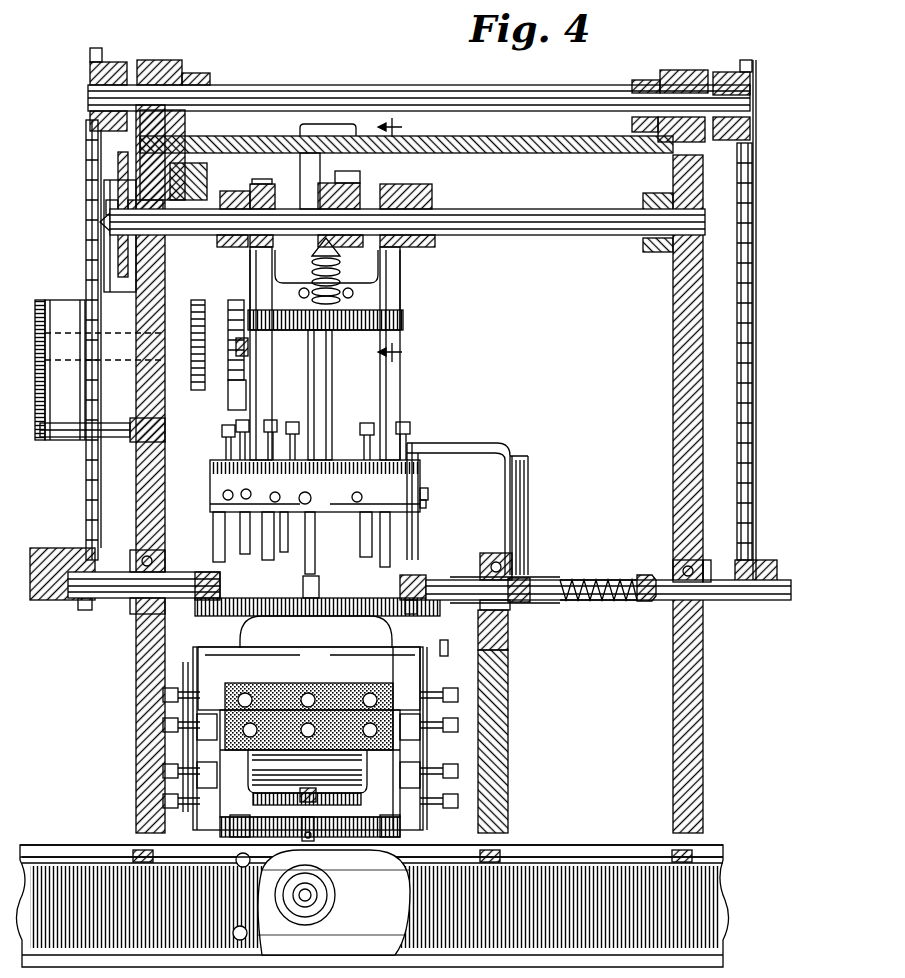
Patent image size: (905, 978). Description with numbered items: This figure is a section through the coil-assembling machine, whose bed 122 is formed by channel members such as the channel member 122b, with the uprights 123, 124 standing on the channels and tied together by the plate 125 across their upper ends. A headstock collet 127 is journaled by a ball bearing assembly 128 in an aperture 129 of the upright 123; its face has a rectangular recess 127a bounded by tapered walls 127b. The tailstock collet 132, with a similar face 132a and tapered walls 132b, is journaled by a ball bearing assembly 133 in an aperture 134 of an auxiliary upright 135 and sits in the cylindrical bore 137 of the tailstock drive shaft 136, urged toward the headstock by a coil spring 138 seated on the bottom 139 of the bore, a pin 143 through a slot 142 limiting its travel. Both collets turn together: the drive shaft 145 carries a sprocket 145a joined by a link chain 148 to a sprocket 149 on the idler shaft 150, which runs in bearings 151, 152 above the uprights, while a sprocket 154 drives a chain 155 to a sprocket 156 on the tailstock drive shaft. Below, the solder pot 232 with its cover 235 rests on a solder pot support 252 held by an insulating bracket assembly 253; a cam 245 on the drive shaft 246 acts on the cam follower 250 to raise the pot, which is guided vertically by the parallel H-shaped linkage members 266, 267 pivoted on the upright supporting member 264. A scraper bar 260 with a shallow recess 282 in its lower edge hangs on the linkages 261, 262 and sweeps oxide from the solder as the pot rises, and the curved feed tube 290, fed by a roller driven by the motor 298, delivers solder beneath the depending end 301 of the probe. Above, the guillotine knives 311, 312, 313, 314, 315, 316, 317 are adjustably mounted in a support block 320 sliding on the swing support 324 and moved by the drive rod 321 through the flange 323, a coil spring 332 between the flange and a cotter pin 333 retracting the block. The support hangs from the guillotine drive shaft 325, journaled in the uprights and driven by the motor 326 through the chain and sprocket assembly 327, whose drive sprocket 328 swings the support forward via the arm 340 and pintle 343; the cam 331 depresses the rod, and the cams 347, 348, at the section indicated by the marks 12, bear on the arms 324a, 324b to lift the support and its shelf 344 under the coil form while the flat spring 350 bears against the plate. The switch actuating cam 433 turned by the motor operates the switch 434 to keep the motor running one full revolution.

The section line 12- 12 is at (407, 239).
The bed 122 is at (742, 890).
The channel member 122b is at (715, 845).
The upright 123 is at (136, 808).
The upright 124 is at (673, 352).
The plate 125 is at (558, 153).
The headstock collet 127 is at (168, 572).
The rectangular recess 127a is at (222, 572).
The tapered walls 127b is at (212, 605).
The ball bearing assembly 128 is at (165, 555).
The aperture 129 is at (135, 612).
The tailstock collet 132 is at (440, 580).
The face 132a is at (415, 575).
The tapered walls 132b is at (414, 610).
The ball bearing assembly 133 is at (508, 632).
The aperture 134 is at (505, 557).
The auxiliary upright 135 is at (508, 790).
The tailstock drive shaft 136 is at (645, 575).
The cylindrical bore 137 is at (600, 580).
The coil spring 138 is at (640, 600).
The bottom of the hole 139 is at (655, 606).
The slot 142 is at (520, 578).
The pin 143 is at (508, 606).
The drive shaft 145 is at (72, 550).
The sprocket 145a is at (78, 612).
The link chain 148 is at (86, 490).
The sprocket 149 is at (108, 62).
The idler shaft 150 is at (402, 85).
The bearing 151 is at (170, 60).
The bearing 152 is at (684, 70).
The sprocket 154 is at (738, 72).
The chain 155 is at (752, 338).
The sprocket 156 is at (762, 600).
The solder pot 232 is at (193, 680).
The cover 235 is at (300, 648).
The cam 245 is at (415, 900).
The drive shaft 246 is at (318, 893).
The cam follower 250 is at (314, 842).
The solder pot support 252 is at (240, 817).
The insulating bracket assembly 253 is at (326, 683).
The scraper bar 260 is at (280, 647).
The linkage 261 is at (193, 668).
The linkage 262 is at (428, 682).
The upright supporting member 264 is at (432, 650).
The H-shaped linkage member 266 is at (380, 752).
The H-shaped linkage member 267 is at (324, 766).
The recess 282 is at (345, 670).
The feed tube 290 is at (315, 520).
The motor 298 is at (492, 443).
The depending end 301 is at (316, 576).
The knife 311 is at (226, 525).
The knife 312 is at (242, 550).
The knife 313 is at (264, 545).
The knife 314 is at (290, 522).
The knife 315 is at (362, 560).
The knife 316 is at (421, 503).
The knife 317 is at (405, 528).
The support block 320 is at (422, 492).
The drive rod 321 is at (324, 378).
The flange 323 is at (380, 312).
The swing support 324 is at (402, 382).
The arm 324a is at (262, 184).
The arm 324b is at (395, 184).
The guillotine drive shaft 325 is at (540, 235).
The drive motor 326 is at (72, 440).
The chain and sprocket assembly 327 is at (228, 271).
The drive sprocket 328 is at (200, 163).
The cam 331 is at (340, 183).
The coil spring 332 is at (400, 285).
The cotter pin 333 is at (346, 252).
The arm 340 is at (246, 350).
The pintle 343 is at (236, 318).
The shelf 344 is at (340, 648).
The cam 347 is at (240, 191).
The cam 348 is at (434, 247).
The flat spring 350 is at (332, 124).
The switch actuating cam 433 is at (118, 160).
The switch 434 is at (104, 185).